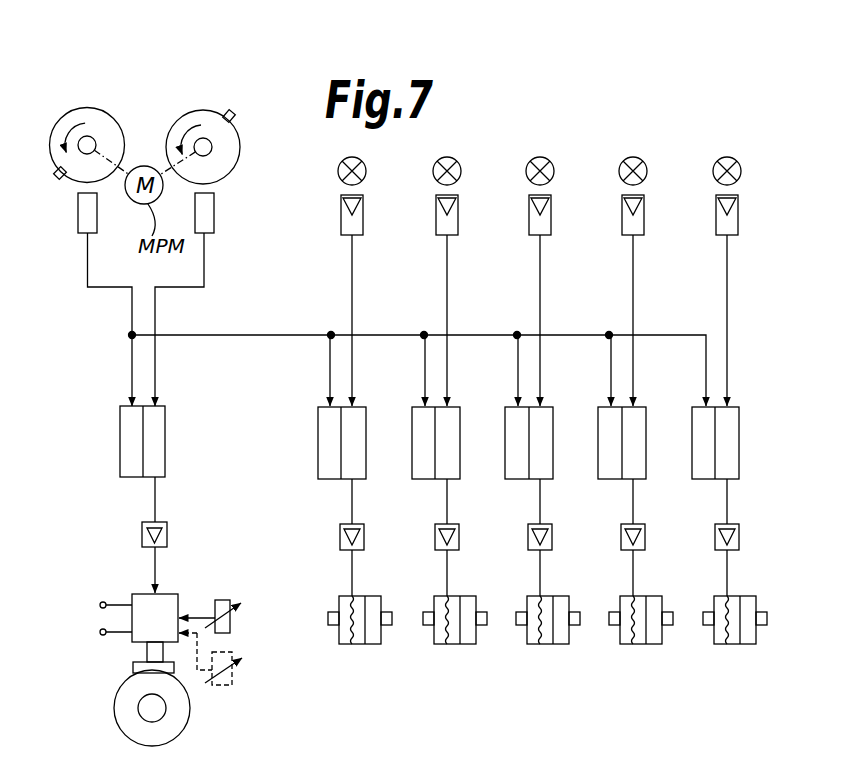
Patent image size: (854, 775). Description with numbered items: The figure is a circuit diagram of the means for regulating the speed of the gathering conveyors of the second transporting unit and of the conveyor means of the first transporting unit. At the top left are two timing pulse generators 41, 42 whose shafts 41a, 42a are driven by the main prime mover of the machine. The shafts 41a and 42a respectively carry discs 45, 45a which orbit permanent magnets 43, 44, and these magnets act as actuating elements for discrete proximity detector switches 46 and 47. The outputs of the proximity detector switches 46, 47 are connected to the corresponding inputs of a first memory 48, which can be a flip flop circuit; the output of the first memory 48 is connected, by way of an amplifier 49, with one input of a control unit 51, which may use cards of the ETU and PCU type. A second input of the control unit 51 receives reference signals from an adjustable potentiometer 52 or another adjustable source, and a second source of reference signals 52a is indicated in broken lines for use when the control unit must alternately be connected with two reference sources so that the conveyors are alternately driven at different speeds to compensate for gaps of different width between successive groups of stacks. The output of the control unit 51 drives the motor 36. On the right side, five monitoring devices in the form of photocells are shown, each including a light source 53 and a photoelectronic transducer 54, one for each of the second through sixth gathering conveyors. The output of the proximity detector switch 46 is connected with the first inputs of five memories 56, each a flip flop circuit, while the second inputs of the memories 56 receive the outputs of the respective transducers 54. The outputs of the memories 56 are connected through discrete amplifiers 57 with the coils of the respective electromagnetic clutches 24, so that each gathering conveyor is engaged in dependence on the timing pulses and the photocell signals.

The timing pulse generator 41 is at (130, 124).
The shaft 41a is at (93, 138).
The timing pulse generator 42 is at (257, 161).
The shaft 42a is at (212, 156).
The permanent magnet 43 is at (56, 180).
The permanent magnet 44 is at (233, 110).
The disc 45 is at (110, 107).
The disc 45a is at (236, 135).
The proximity detector switch 46 is at (97, 214).
The proximity detector switch 47 is at (214, 215).
The first memory 48 is at (165, 433).
The amplifier 49 is at (167, 530).
The control unit 51 is at (178, 598).
The adjustable potentiometer 52 is at (230, 633).
The second source of reference signals 52a is at (232, 682).
The motor 36 is at (191, 707).
The light source 53 is at (366, 164).
The photoelectronic transducer 54 is at (363, 211).
The memory 56 is at (318, 428).
The amplifier 57 is at (367, 537).
The electromagnetic clutch 24 is at (458, 645).